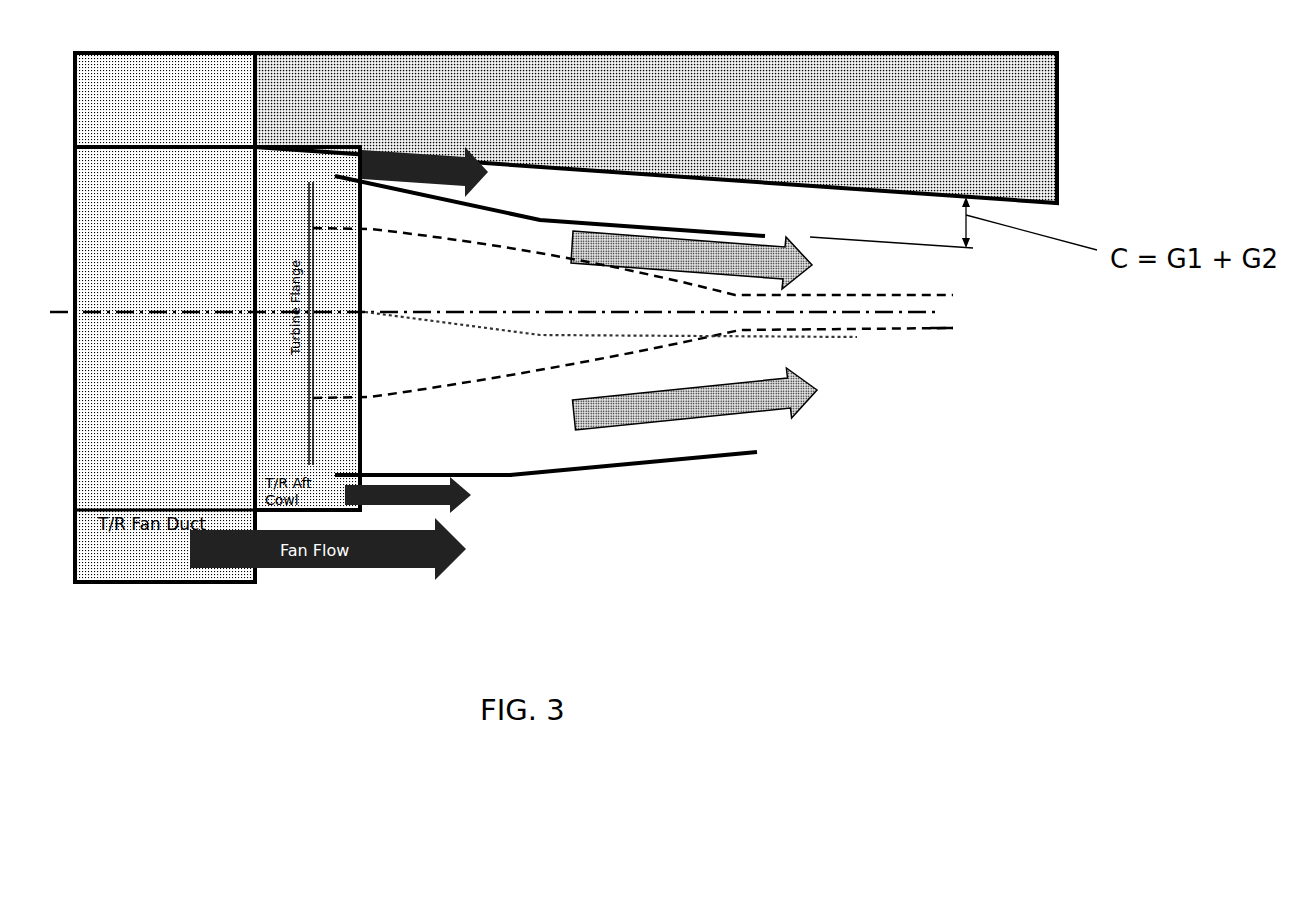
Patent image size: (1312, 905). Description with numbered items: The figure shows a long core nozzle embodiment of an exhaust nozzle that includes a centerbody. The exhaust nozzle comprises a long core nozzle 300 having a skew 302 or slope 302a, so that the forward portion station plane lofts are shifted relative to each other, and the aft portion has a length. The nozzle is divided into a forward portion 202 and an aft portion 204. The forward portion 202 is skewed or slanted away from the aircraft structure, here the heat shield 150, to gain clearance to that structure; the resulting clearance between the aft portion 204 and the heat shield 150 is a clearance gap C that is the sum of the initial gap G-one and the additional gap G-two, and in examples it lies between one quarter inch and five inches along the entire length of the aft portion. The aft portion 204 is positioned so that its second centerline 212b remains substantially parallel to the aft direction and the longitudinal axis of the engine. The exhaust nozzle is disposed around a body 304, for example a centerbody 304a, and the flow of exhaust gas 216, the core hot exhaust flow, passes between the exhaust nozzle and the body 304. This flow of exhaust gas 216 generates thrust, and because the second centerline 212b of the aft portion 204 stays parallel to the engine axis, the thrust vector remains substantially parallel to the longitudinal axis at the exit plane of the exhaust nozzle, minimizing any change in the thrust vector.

The heat shield 150 is at (656, 128).
The forward portion 202 is at (518, 478).
The aft portion 204 is at (730, 458).
The second centerline 212b is at (828, 336).
The exhaust gas 216 is at (805, 410).
The long core nozzle 300 is at (845, 500).
The skew 302 is at (478, 478).
The slope 302a is at (425, 172).
The body 304 is at (964, 333).
The centerbody 304a is at (611, 324).